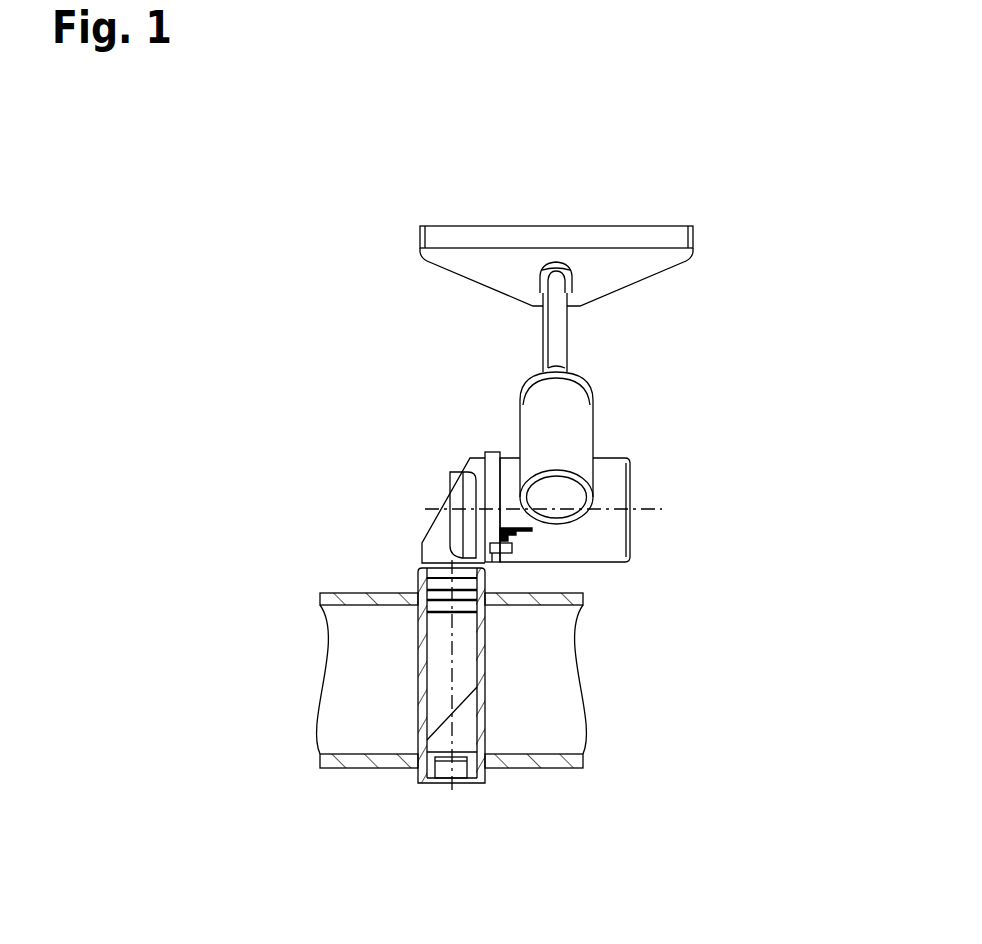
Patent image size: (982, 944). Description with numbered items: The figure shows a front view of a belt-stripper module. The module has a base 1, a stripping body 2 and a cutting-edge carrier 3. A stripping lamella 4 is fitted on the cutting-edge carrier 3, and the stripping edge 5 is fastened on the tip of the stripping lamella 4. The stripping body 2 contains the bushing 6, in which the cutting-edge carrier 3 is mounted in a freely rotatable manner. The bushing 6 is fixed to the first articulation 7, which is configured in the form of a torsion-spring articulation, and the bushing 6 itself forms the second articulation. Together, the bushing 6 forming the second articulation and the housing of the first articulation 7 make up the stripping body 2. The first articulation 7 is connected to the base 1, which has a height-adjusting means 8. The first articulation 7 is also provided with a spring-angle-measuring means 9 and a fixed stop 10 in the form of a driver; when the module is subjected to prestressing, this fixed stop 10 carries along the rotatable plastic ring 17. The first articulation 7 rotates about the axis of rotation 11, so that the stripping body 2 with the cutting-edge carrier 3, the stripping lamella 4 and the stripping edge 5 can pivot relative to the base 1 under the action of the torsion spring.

The base 1 is at (437, 660).
The stripping body 2 is at (553, 332).
The cutting-edge carrier 3 is at (557, 348).
The stripping lamella 4 is at (473, 265).
The stripping edge 5 is at (678, 240).
The bushing 6 is at (577, 437).
The first articulation 7 is at (618, 535).
The height-adjusting means 8 is at (437, 587).
The spring-angle-measuring means 9 is at (500, 562).
The fixed stop 10 is at (510, 550).
The axis of rotation 11 is at (662, 510).
The rotatable plastic ring 17 is at (495, 467).